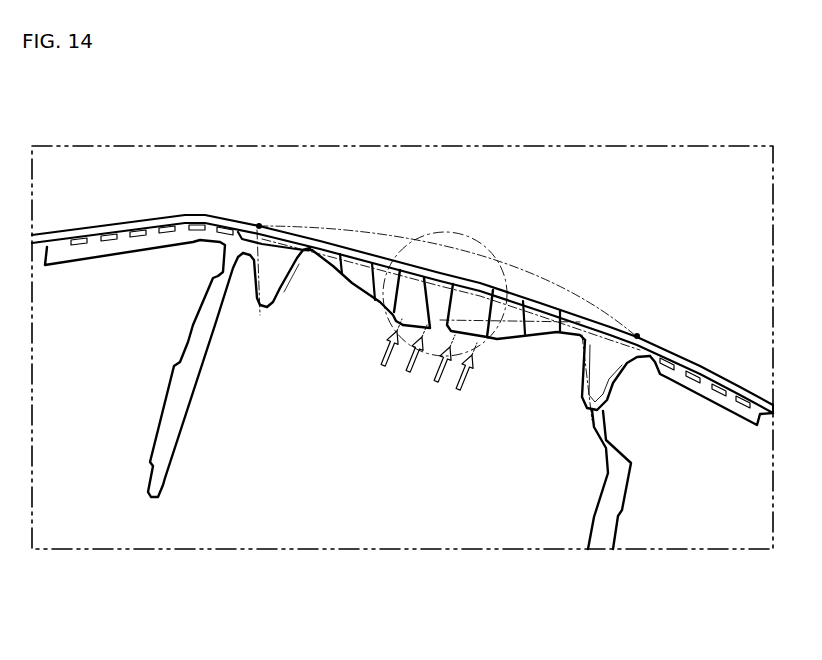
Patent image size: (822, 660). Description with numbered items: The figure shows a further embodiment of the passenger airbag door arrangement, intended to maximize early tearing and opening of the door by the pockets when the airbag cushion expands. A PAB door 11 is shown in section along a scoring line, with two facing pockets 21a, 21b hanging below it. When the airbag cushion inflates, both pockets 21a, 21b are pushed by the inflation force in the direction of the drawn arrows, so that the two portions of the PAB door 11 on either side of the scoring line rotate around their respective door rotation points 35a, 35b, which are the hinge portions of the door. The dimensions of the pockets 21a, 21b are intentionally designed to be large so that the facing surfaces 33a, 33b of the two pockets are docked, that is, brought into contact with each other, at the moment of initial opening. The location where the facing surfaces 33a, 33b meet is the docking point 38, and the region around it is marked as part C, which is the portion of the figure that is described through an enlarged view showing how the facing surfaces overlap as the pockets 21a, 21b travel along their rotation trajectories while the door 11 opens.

The PAB door 11 is at (316, 234).
The pocket 21a is at (378, 290).
The pocket 21b is at (504, 316).
The facing surface 33a is at (426, 331).
The facing surface 33b is at (456, 338).
The door rotation point 35a is at (259, 223).
The door rotation point 35b is at (637, 333).
The docking point 38 is at (470, 262).
The part C is at (430, 232).